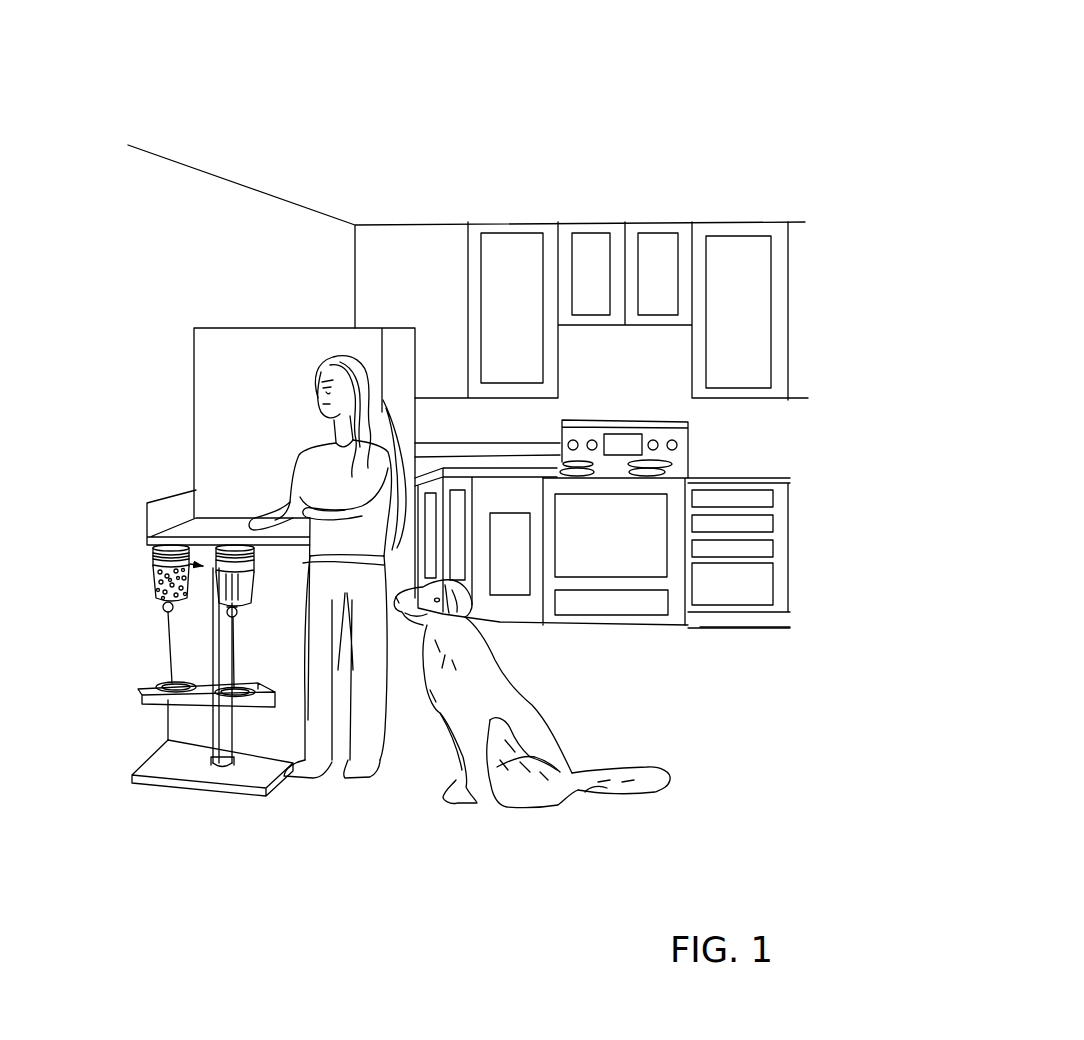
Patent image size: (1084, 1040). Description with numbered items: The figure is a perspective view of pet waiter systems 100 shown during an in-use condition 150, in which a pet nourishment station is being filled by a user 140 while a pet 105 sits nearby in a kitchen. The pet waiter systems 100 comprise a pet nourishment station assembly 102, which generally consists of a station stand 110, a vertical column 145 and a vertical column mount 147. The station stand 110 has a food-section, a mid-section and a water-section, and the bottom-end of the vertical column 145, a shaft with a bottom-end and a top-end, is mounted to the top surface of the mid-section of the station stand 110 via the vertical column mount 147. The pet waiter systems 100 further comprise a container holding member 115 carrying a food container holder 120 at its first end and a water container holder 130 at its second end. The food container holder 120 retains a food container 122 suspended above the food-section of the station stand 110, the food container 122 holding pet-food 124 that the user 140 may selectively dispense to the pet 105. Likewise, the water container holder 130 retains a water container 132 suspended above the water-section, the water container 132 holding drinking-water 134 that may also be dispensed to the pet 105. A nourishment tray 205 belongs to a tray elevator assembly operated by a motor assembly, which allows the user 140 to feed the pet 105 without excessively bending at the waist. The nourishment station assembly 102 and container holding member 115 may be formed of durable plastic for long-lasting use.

The pet waiter systems 100 is at (598, 72).
The pet nourishment station assembly 102 is at (636, 96).
The in-use condition 150 is at (675, 132).
The pet 105 is at (494, 698).
The station stand 110 is at (182, 772).
The container holding member 115 is at (253, 606).
The food container holder 120 is at (148, 546).
The food container 122 is at (148, 568).
The pet-food 124 is at (158, 583).
The water container holder 130 is at (259, 570).
The water container 132 is at (260, 553).
The drinking-water 134 is at (260, 587).
The user 140 is at (367, 545).
The vertical column 145 is at (250, 728).
The vertical column mount 147 is at (238, 772).
The nourishment tray 205 is at (145, 690).